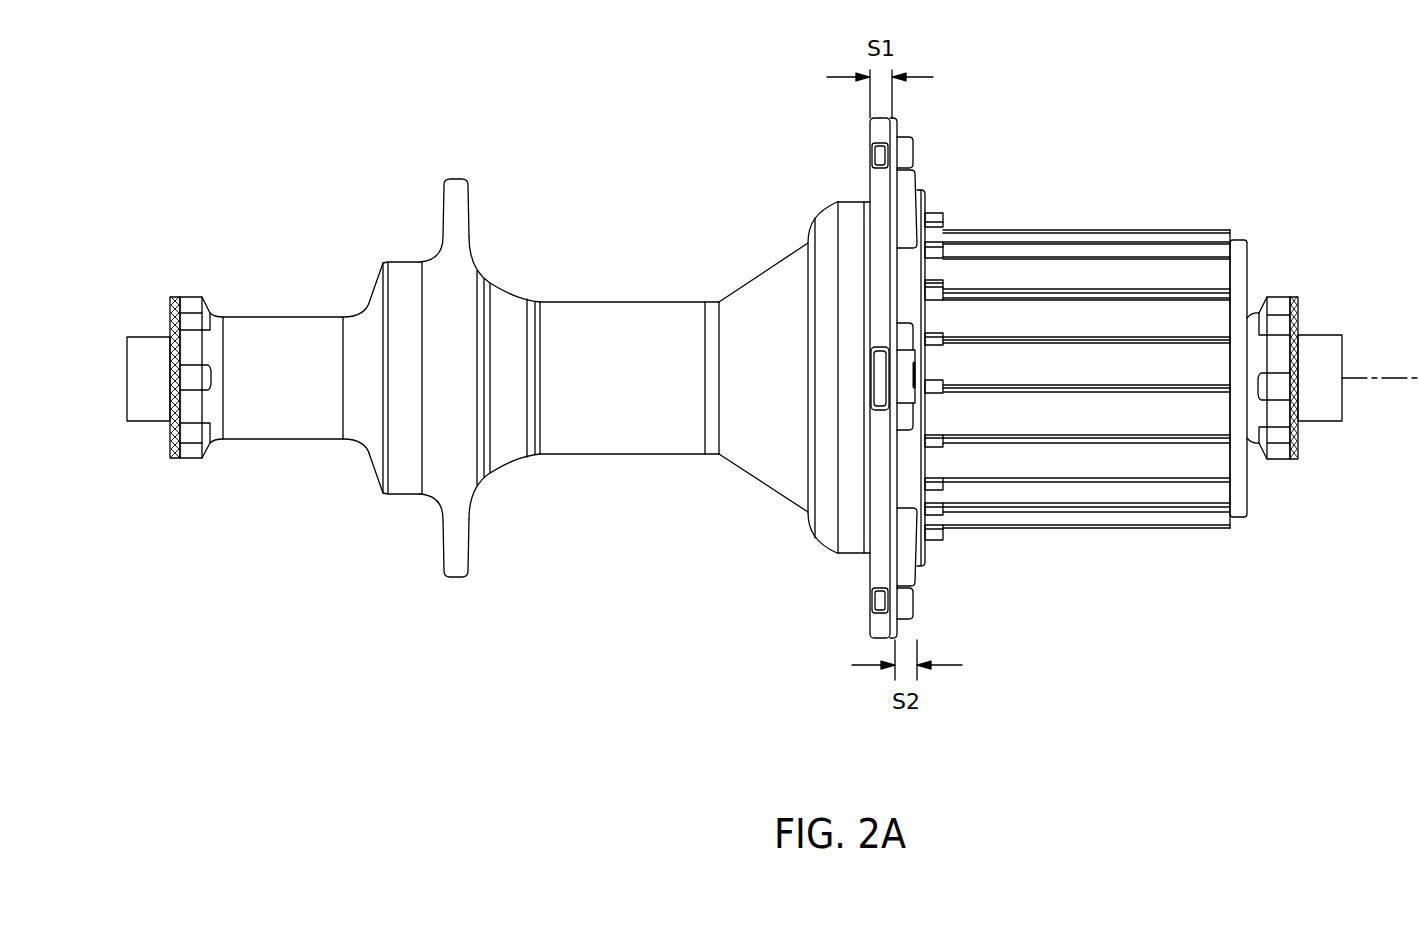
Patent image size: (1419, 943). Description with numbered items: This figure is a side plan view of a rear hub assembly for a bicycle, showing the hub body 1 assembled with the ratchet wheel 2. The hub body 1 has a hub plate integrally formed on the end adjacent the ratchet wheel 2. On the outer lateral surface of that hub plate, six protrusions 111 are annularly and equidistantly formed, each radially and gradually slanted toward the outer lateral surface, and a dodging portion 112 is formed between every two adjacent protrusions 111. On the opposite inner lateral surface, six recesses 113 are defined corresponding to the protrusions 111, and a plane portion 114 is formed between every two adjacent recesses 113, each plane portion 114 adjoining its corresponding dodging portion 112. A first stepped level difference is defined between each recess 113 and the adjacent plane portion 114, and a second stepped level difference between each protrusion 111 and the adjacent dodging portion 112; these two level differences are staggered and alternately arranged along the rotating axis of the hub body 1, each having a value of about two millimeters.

The hub body 1 is at (584, 154).
The ratchet wheel 2 is at (1213, 253).
The protrusion 111 is at (900, 384).
The dodging portion 112 is at (900, 286).
The recess 113 is at (878, 157).
The plane portion 114 is at (872, 247).